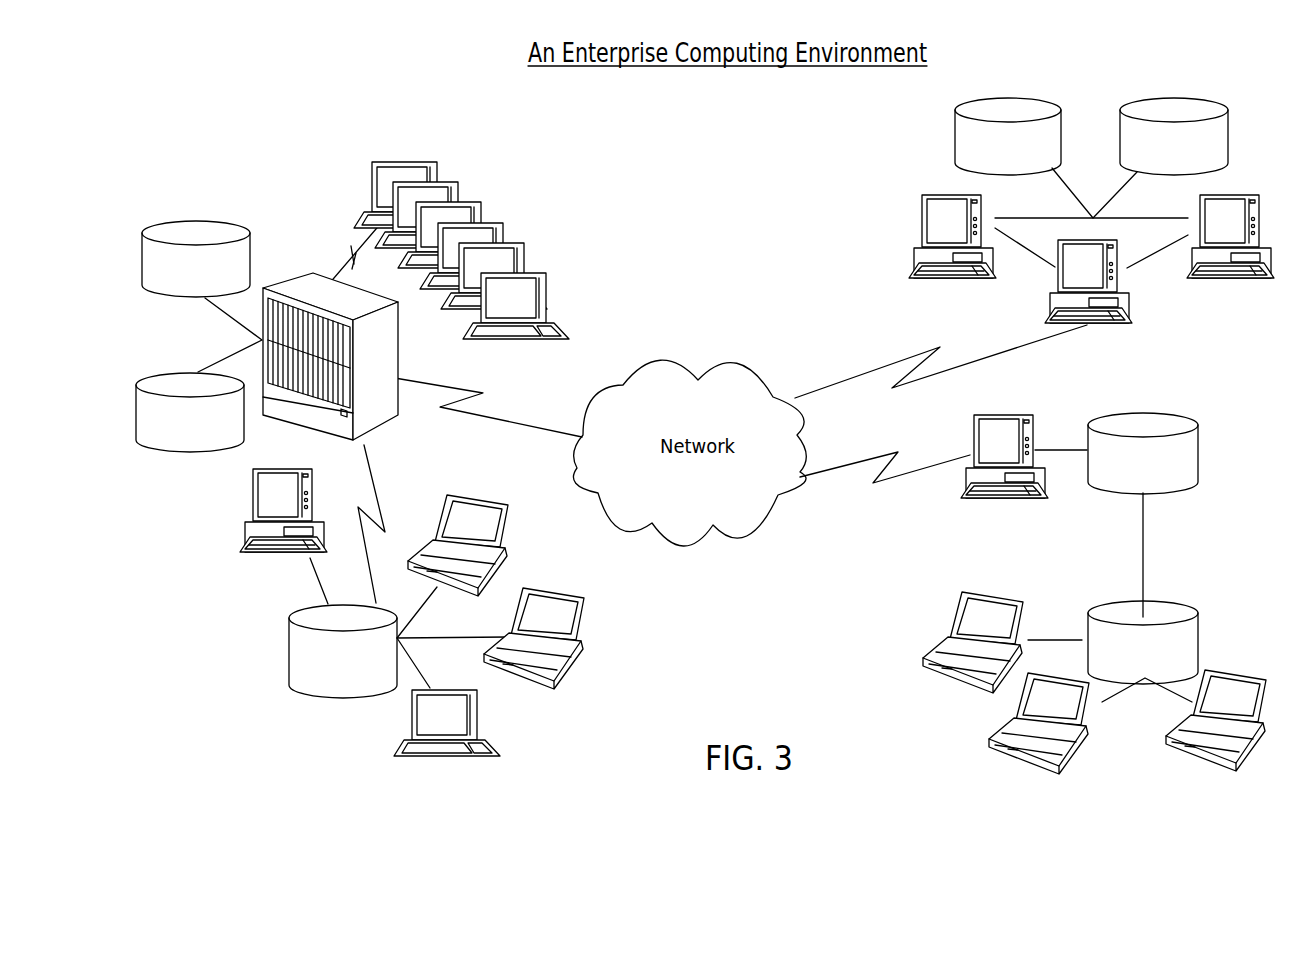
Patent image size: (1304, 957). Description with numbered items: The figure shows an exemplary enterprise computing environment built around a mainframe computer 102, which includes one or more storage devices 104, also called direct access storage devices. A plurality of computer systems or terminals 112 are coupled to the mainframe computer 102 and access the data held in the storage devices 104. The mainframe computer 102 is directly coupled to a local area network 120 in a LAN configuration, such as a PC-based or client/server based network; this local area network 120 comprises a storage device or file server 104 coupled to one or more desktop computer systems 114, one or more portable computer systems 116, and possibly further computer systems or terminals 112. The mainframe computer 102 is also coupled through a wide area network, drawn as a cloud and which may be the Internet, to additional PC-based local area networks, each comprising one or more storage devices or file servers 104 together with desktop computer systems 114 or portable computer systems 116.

The mainframe computer 102 is at (386, 406).
The storage device 104 is at (1162, 471).
The computer system or terminal 112 is at (527, 217).
The desktop computer system 114 is at (243, 523).
The portable computer system 116 is at (507, 527).
The local area network 120 is at (241, 750).